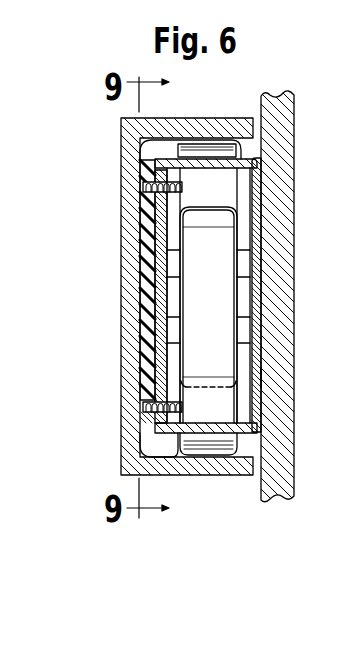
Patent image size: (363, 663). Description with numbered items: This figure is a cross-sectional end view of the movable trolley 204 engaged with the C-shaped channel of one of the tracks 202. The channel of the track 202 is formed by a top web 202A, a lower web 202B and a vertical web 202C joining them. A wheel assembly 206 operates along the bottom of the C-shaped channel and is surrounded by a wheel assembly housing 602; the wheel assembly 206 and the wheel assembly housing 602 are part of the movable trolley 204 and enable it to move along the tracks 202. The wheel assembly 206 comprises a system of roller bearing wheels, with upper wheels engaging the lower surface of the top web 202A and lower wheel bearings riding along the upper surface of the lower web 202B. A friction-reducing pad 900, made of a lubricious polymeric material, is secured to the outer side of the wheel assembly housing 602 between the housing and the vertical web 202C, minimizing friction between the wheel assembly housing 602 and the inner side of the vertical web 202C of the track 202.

The track 202 is at (197, 476).
The top web 202A is at (171, 143).
The lower web 202B is at (150, 448).
The vertical web 202C is at (158, 306).
The movable trolley 204 is at (290, 222).
The wheel assembly 206 is at (262, 319).
The wheel assembly housing 602 is at (264, 377).
The friction-reducing pad 900 is at (146, 267).